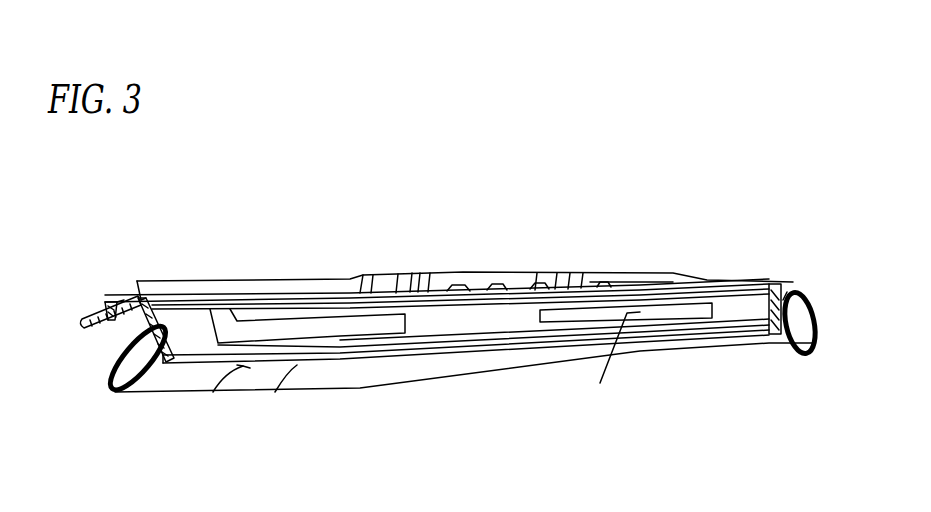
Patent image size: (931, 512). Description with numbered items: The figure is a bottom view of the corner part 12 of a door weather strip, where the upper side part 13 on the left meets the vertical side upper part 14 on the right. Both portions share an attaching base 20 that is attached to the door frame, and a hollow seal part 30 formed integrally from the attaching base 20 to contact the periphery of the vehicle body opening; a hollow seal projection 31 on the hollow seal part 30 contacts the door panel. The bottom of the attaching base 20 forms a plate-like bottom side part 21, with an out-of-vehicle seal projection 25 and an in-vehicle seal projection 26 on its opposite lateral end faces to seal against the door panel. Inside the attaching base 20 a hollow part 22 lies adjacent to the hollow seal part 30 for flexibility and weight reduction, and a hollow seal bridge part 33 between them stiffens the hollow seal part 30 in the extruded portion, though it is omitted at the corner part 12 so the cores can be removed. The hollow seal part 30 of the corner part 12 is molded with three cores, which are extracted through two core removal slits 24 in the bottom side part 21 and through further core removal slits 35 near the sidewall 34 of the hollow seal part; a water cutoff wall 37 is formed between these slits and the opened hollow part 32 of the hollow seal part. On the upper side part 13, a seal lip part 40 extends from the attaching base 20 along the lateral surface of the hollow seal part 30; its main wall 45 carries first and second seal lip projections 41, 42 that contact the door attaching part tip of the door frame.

The corner part 12 is at (448, 370).
The upper side part 13 is at (190, 330).
The vertical side upper part 14 is at (748, 295).
The attaching base 20 is at (773, 340).
The bottom side part 21 is at (207, 368).
The hollow part 22 is at (177, 355).
The core removal slits 24 is at (648, 310).
The out-of-vehicle seal projection 25 is at (168, 305).
The in-vehicle seal projection 26 is at (240, 362).
The hollow seal part 30 is at (810, 360).
The hollow seal projection 31 is at (798, 290).
The hollow part of hollow seal part 32 is at (132, 370).
The hollow seal bridge part 33 is at (138, 352).
The sidewall of the hollow seal part 34 is at (813, 295).
The core removal slits 35 is at (436, 293).
The water cutoff wall 37 is at (600, 383).
The seal lip part 40 is at (92, 318).
The first seal lip projection 41 is at (105, 297).
The second seal lip projection 42 is at (133, 290).
The main wall 45 is at (122, 293).